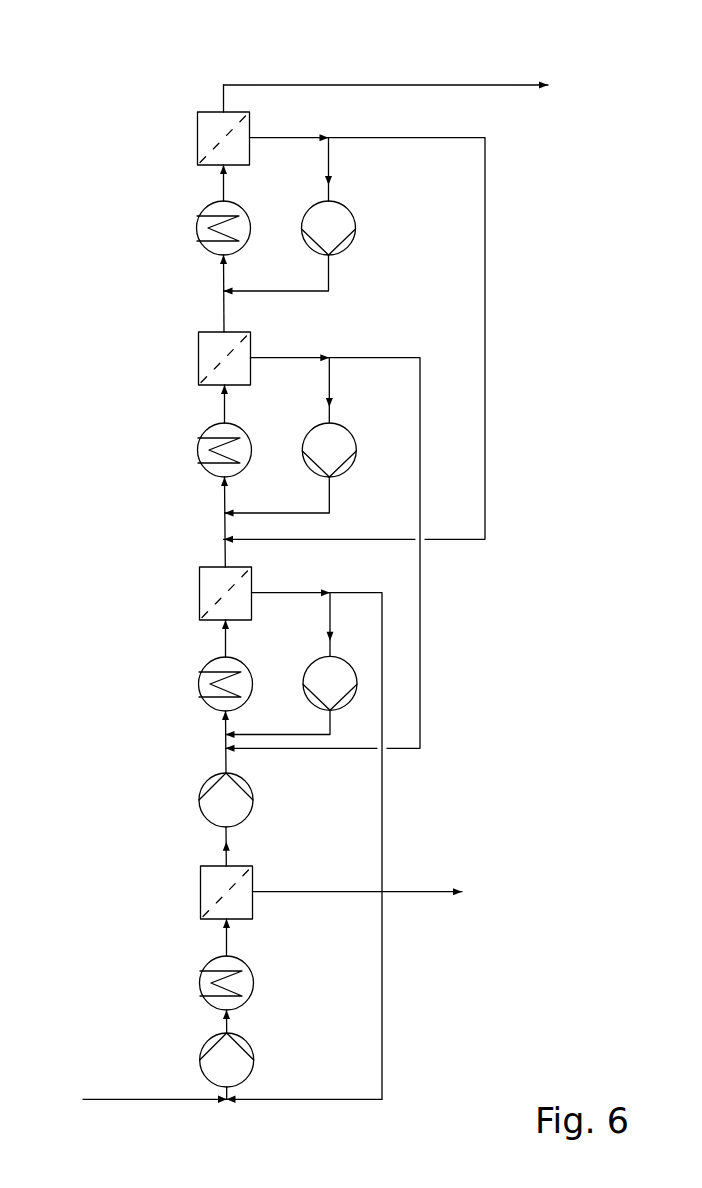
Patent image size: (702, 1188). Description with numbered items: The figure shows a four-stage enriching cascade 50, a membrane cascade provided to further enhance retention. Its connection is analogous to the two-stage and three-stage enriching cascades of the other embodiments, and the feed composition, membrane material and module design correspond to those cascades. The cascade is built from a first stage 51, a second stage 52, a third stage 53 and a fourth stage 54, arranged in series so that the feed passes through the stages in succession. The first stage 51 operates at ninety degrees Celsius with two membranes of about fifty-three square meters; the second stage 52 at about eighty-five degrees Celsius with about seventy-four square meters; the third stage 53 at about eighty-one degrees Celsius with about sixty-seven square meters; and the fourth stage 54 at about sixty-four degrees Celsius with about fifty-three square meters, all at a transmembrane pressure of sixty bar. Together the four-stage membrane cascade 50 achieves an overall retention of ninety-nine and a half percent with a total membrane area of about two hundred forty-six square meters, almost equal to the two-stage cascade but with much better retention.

The four-stage enriching cascade 50 is at (103, 46).
The first stage 51 is at (215, 905).
The second stage 52 is at (213, 606).
The third stage 53 is at (212, 371).
The fourth stage 54 is at (210, 149).